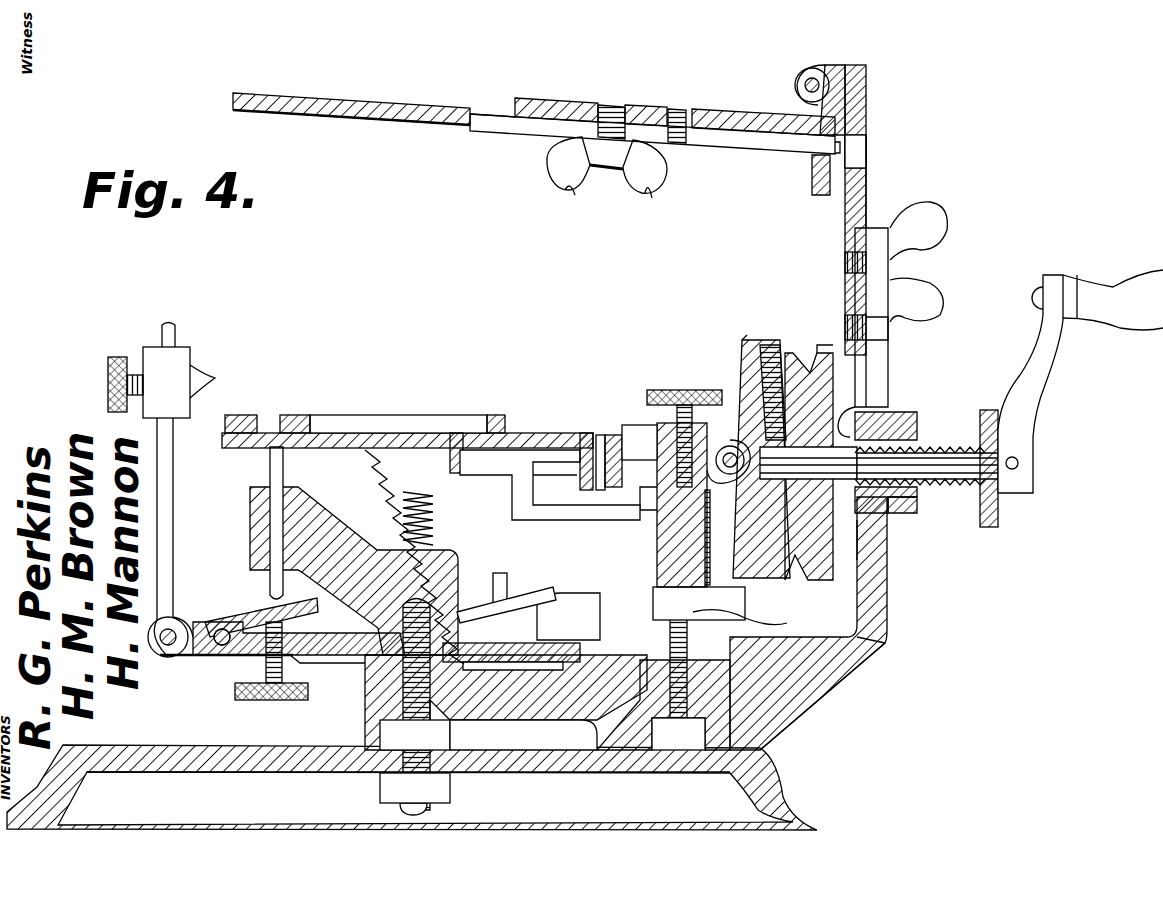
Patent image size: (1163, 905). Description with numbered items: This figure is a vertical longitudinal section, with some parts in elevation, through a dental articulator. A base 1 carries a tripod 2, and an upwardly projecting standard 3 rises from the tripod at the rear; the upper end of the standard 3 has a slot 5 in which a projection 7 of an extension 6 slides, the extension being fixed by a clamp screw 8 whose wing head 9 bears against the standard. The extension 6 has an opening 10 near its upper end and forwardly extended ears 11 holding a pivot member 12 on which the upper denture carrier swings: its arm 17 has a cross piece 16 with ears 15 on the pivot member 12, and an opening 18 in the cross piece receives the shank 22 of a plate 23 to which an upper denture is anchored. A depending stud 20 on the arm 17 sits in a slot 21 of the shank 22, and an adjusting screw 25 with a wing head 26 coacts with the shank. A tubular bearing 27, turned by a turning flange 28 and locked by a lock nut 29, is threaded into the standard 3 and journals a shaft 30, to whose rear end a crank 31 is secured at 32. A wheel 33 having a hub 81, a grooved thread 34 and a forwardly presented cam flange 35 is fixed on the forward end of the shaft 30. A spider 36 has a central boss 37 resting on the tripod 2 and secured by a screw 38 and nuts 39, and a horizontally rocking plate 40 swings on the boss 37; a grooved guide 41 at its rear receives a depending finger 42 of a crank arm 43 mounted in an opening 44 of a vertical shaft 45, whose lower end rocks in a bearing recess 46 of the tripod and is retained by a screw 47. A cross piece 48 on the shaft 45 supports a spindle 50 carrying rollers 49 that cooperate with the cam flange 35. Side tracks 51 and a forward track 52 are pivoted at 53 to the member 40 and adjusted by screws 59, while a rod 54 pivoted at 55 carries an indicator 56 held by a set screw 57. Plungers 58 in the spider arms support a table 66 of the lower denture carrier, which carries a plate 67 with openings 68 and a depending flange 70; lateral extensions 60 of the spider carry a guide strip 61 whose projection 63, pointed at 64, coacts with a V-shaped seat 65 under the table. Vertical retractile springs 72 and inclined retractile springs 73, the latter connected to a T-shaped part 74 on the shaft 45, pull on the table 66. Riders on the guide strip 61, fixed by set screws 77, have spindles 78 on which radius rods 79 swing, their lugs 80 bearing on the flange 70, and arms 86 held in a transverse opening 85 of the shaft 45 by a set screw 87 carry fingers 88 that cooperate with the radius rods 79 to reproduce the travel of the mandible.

The base 1 is at (780, 795).
The tripod 2 is at (300, 765).
The standard 3 is at (888, 600).
The slot 5 is at (888, 370).
The extension 6 is at (868, 95).
The projection 7 is at (880, 335).
The clamp screw 8 is at (880, 230).
The wing head 9 is at (950, 220).
The opening 10 is at (868, 152).
The ears 11 is at (840, 62).
The pivot member 12 is at (812, 78).
The ears 15 is at (800, 82).
The cross piece 16 is at (812, 180).
The arm 17 is at (645, 105).
The opening 18 is at (828, 160).
The depending stud 20 is at (680, 107).
The slot 21 is at (735, 148).
The shank 22 is at (525, 142).
The plate 23 is at (345, 105).
The adjusting screw 25 is at (608, 103).
The wing head 26 is at (598, 185).
The tubular bearing 27 is at (915, 510).
The turning flange 28 is at (988, 410).
The lock nut 29 is at (888, 545).
The shaft 30 is at (925, 455).
The crank 31 is at (1040, 375).
The crank securing point 32 is at (1020, 465).
The wheel 33 is at (790, 358).
The grooved thread 34 is at (822, 350).
The cam flange 35 is at (745, 345).
The spider 36 is at (370, 525).
The central boss 37 is at (282, 634).
The screw 38 is at (455, 707).
The nuts 39 is at (382, 785).
The plate 40 is at (523, 735).
The grooved guide 41 is at (570, 616).
The depending finger 42 is at (529, 655).
The crank arm 43 is at (745, 603).
The opening 44 is at (787, 623).
The vertical shaft 45 is at (850, 650).
The bearing recess 46 is at (800, 705).
The screw 47 is at (678, 720).
The cross piece 48 is at (770, 480).
The rollers 49 is at (808, 463).
The spindle 50 is at (765, 440).
The side tracks 51 is at (528, 595).
The forward track 52 is at (245, 615).
The pivot 53 is at (220, 645).
The rod 54 is at (175, 475).
The pivot 55 is at (168, 647).
The indicator 56 is at (190, 350).
The set screw 57 is at (110, 375).
The plungers 58 is at (283, 475).
The screws 59 is at (255, 700).
The lateral extensions 60 is at (556, 490).
The guide strip 61 is at (637, 497).
The projection 63 is at (530, 470).
The point 64 is at (497, 415).
The V-shaped seat 65 is at (456, 433).
The table 66 is at (355, 433).
The plate 67 is at (297, 415).
The openings 68 is at (275, 415).
The depending flange 70 is at (585, 433).
The vertical retractile springs 72 is at (399, 518).
The inclined retractile springs 73 is at (427, 557).
The T-shaped part 74 is at (630, 575).
The set screws 77 is at (712, 540).
The spindles 78 is at (675, 410).
The radius rods 79 is at (612, 435).
The lugs 80 is at (600, 435).
The hub 81 is at (875, 400).
The transverse opening 85 is at (715, 485).
The arms 86 is at (732, 446).
The set screw 87 is at (688, 390).
The fingers 88 is at (633, 425).